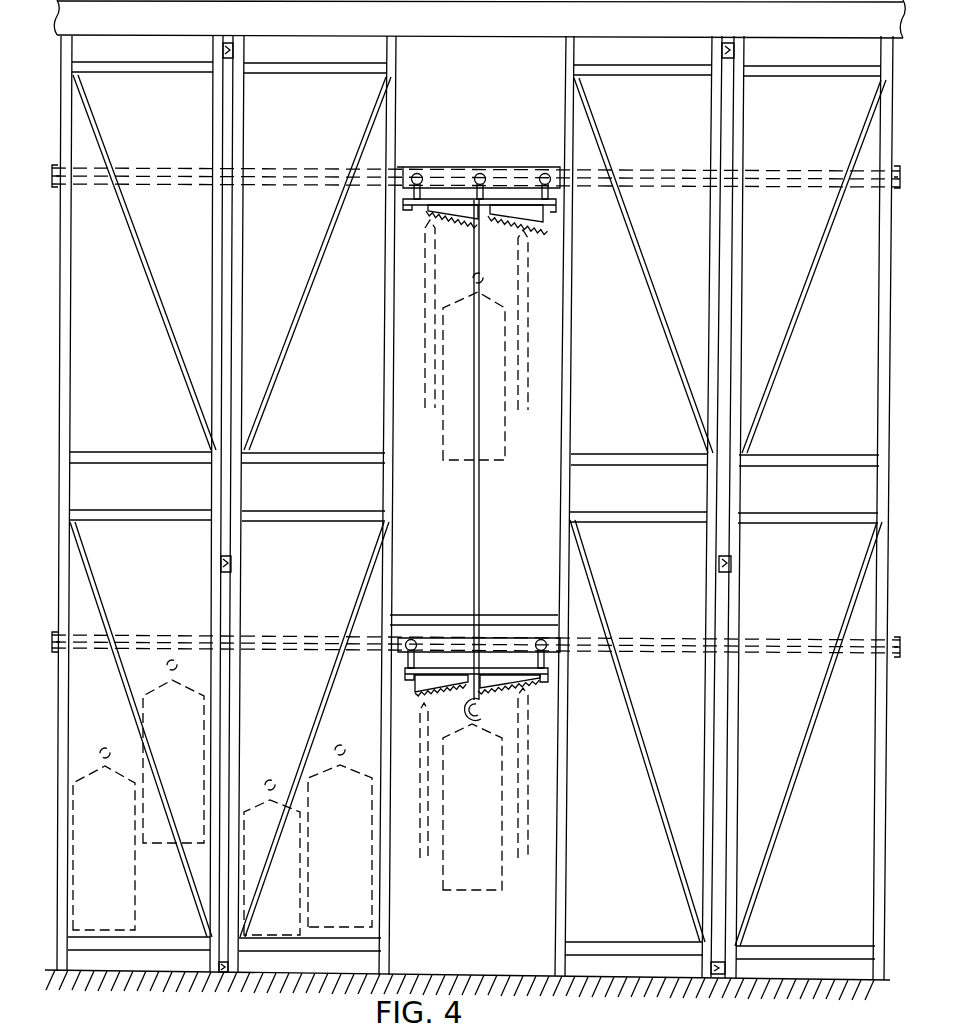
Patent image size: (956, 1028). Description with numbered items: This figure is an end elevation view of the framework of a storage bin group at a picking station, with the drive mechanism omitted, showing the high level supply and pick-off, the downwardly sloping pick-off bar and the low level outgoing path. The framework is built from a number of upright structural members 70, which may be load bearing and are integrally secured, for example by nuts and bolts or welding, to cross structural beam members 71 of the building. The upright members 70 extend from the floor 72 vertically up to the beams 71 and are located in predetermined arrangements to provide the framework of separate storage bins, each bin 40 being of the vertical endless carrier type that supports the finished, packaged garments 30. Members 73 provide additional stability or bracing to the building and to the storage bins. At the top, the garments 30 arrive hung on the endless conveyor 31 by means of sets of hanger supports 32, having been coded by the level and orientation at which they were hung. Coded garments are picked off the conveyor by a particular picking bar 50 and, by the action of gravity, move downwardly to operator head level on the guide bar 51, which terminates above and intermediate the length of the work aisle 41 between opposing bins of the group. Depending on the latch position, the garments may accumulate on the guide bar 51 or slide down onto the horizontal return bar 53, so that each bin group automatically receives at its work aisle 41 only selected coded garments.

The packaged garments 30 is at (506, 445).
The endless conveyor 31 is at (504, 164).
The hanger supports 32 is at (500, 232).
The bin 40 is at (74, 252).
The work aisle 41 is at (448, 935).
The picking bar 50 is at (474, 466).
The guide bar 51 is at (474, 532).
The horizontal return bar 53 is at (482, 713).
The upright structural members 70 is at (68, 481).
The cross structural beam members 71 is at (470, 38).
The floor 72 is at (508, 975).
The bracing members 73 is at (236, 50).